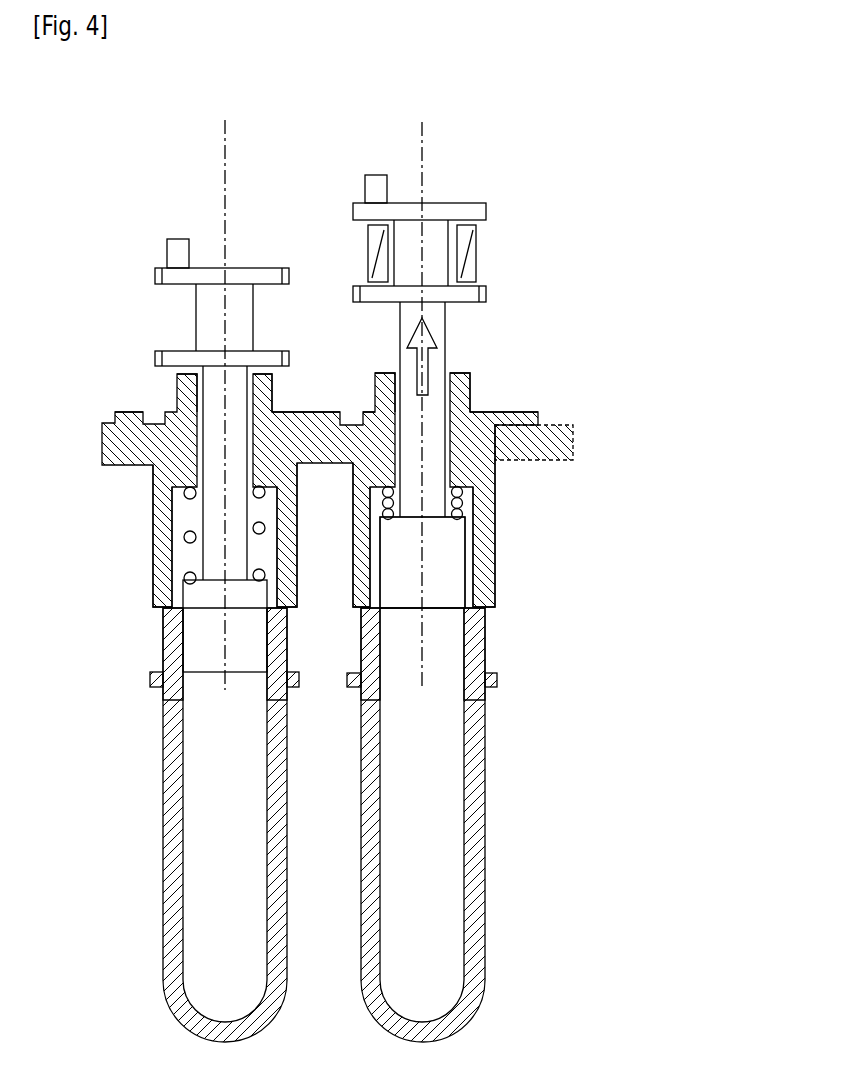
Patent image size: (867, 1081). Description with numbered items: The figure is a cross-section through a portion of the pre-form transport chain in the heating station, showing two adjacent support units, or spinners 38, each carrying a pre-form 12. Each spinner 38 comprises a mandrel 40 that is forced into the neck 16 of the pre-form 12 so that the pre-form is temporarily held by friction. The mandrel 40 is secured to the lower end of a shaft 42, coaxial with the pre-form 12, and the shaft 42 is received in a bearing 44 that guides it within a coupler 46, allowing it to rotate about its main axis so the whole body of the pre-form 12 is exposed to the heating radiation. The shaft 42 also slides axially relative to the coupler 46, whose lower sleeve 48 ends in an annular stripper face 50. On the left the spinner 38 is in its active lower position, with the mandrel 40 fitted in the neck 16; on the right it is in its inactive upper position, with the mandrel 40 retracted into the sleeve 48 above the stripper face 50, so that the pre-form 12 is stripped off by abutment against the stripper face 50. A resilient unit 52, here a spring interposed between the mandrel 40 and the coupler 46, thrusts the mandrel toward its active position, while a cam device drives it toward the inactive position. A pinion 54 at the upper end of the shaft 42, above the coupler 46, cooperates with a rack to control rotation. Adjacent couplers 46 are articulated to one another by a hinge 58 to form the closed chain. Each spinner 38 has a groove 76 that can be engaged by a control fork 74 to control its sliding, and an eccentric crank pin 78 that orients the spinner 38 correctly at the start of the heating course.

The pre-form 12 is at (158, 777).
The neck 16 is at (170, 656).
The spinner 38 is at (262, 218).
The mandrel 40 is at (205, 628).
The shaft 42 is at (217, 399).
The bearing 44 is at (212, 442).
The coupler 46 is at (148, 513).
The sleeve 48 is at (153, 558).
The stripper face 50 is at (470, 607).
The resilient unit 52 is at (463, 504).
The pinion 54 is at (172, 276).
The hinge 58 is at (294, 402).
The control fork 74 is at (470, 253).
The groove 76 is at (475, 210).
The crank pin 78 is at (178, 252).